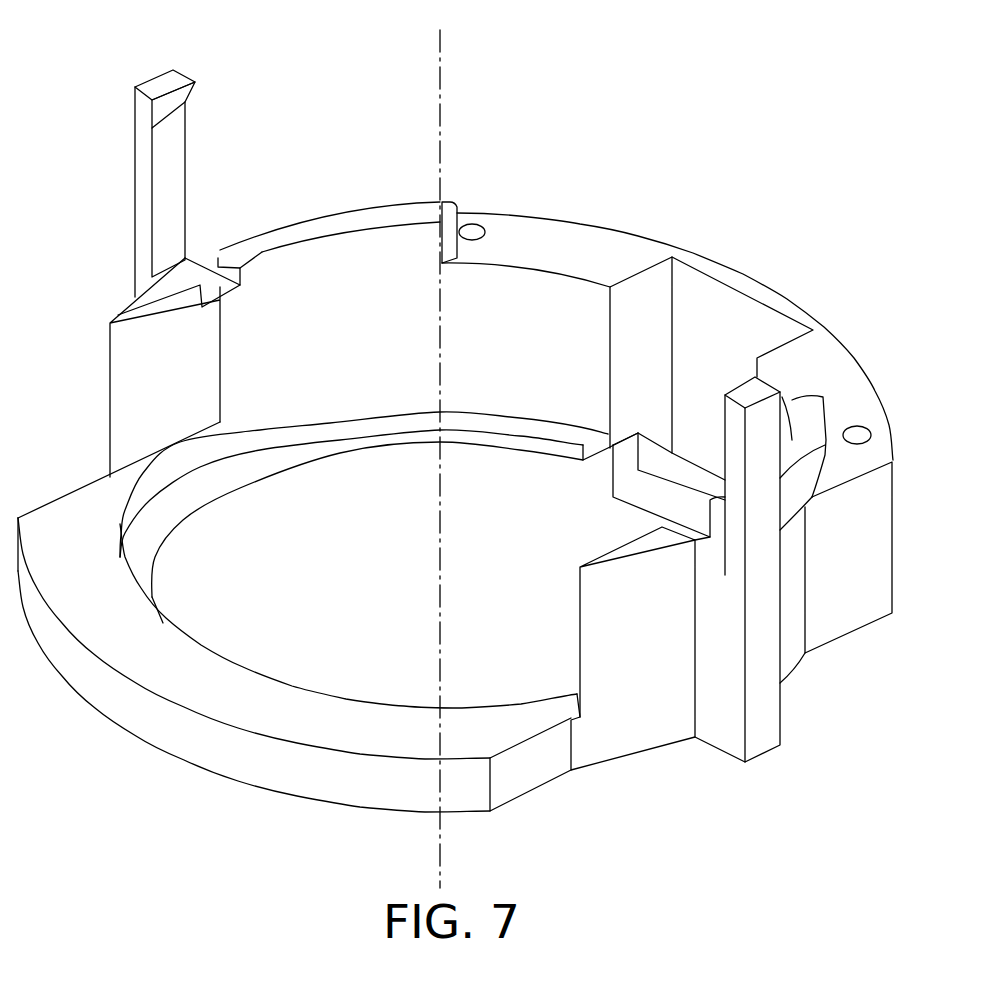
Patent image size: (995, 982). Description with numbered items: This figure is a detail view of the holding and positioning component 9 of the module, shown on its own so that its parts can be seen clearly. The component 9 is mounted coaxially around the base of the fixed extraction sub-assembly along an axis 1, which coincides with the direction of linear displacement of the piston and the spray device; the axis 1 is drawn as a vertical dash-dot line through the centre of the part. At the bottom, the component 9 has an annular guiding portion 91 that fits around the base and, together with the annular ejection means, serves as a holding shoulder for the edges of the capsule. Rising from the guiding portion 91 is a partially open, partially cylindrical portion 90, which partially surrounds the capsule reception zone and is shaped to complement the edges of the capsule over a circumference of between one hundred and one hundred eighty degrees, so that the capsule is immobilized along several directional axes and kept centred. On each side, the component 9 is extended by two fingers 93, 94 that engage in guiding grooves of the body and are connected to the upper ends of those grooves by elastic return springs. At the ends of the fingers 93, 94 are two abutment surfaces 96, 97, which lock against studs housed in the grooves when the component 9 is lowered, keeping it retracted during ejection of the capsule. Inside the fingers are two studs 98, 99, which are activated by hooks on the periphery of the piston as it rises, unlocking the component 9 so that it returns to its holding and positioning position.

The axis 1 is at (447, 57).
The holding and positioning component 9 is at (667, 202).
The partially open partially cylindrical portion 90 is at (353, 297).
The annular guiding portion 91 is at (220, 655).
The finger 93 is at (149, 255).
The finger 94 is at (809, 525).
The abutment surface 96 is at (168, 80).
The abutment surface 97 is at (757, 390).
The stud 98 is at (180, 100).
The stud 99 is at (720, 408).